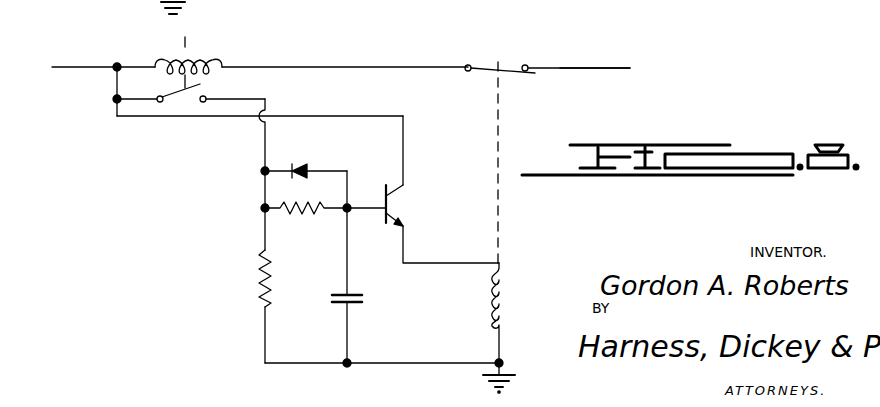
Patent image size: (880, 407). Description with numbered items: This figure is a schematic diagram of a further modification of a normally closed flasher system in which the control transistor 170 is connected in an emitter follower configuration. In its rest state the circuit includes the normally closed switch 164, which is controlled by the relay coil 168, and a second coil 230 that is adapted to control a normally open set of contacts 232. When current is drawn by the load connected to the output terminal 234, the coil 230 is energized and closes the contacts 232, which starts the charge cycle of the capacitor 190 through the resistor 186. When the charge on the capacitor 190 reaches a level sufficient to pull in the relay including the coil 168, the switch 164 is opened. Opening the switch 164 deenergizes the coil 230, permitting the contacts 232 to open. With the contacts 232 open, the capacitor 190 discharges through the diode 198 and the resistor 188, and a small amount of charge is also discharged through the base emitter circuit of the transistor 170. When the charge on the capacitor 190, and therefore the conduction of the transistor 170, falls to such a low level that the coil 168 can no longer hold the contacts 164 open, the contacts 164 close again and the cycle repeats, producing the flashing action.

The normally closed switch 164 is at (525, 72).
The relay coil 168 is at (505, 310).
The control transistor 170 is at (390, 203).
The resistor 186 is at (297, 213).
The resistor 188 is at (262, 270).
The capacitor 190 is at (365, 300).
The diode 198 is at (305, 168).
The second coil 230 is at (213, 57).
The normally open set of contacts 232 is at (177, 110).
The output terminal 234 is at (600, 65).